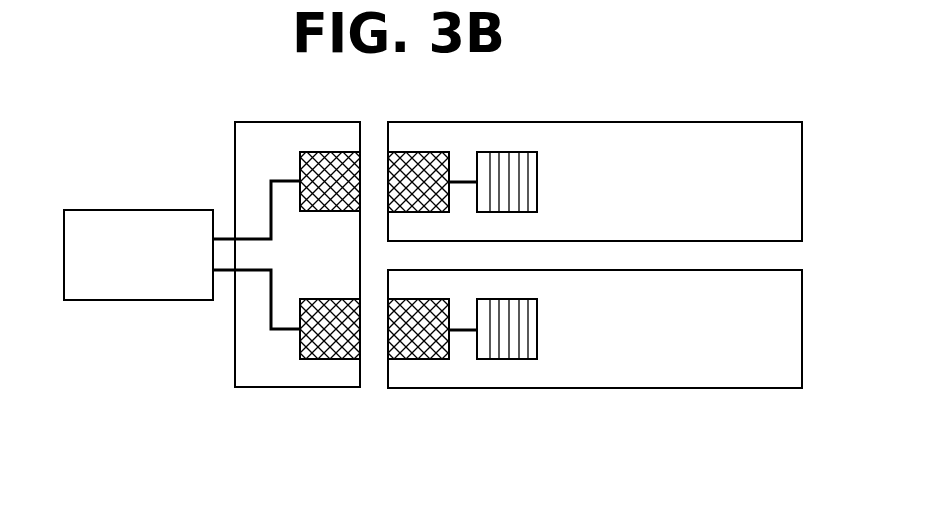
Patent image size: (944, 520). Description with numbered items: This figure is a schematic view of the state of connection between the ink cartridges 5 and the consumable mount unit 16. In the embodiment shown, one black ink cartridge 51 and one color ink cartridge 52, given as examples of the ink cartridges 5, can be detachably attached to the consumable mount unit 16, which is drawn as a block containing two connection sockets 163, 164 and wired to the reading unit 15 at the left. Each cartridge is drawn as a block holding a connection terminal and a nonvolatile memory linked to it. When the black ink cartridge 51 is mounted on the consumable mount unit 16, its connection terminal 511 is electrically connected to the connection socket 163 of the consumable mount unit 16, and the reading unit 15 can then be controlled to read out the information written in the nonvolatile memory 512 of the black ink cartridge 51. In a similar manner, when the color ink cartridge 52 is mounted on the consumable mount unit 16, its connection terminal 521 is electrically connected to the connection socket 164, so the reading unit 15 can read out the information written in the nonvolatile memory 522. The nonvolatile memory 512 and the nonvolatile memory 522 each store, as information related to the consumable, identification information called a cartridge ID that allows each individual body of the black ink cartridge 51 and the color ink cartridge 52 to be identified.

The reading unit 15 is at (137, 210).
The consumable mount unit 16 is at (236, 388).
The connection socket 163 is at (318, 152).
The connection socket 164 is at (331, 359).
The ink cartridges 5 is at (595, 258).
The black ink cartridge 51 is at (698, 122).
The color ink cartridge 52 is at (703, 388).
The connection terminal 511 is at (415, 152).
The nonvolatile memory 512 is at (505, 152).
The connection terminal 521 is at (413, 359).
The nonvolatile memory 522 is at (508, 359).